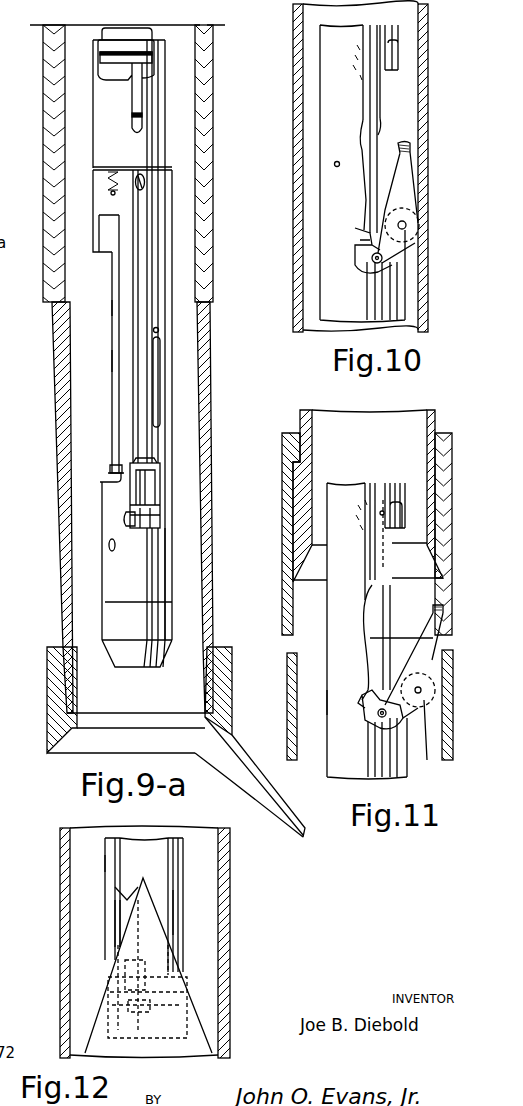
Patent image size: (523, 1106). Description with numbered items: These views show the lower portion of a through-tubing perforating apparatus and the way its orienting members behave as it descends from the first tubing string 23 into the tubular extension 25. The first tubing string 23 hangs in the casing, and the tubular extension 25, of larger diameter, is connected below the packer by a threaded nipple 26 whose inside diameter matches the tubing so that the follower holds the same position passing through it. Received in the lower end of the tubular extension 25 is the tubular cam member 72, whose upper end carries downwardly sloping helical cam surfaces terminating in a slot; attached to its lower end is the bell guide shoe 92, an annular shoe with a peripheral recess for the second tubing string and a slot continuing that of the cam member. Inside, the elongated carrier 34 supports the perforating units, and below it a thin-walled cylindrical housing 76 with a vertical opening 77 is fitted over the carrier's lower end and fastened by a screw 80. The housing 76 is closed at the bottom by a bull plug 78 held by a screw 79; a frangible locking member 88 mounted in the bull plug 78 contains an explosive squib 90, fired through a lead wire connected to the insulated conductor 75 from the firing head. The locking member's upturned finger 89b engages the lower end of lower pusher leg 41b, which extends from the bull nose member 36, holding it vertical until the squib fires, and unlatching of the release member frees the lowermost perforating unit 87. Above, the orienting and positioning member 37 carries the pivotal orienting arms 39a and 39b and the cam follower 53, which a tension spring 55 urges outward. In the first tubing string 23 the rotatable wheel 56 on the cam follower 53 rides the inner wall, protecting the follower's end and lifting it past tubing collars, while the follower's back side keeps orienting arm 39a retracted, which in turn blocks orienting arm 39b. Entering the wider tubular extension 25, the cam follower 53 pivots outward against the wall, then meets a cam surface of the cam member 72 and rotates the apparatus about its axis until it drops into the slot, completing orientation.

In FIG. 10, the first tubing string 23 is at (428, 77).
In FIG. 9A, the tubular extension 25 is at (213, 67).
In FIG. 11, the tubular extension 25 is at (283, 607).
In FIG. 12, the tubular extension 25 is at (230, 917).
In FIG. 11, the threaded nipple 26 is at (287, 445).
In FIG. 9A, the elongated carrier 34 is at (106, 114).
In FIG. 9A, the bull nose member 36 is at (170, 333).
In FIG. 11, the orienting and positioning member 37 is at (322, 703).
In FIG. 12, the orienting and positioning member 37 is at (97, 863).
In FIG. 10, the orienting arm 39a is at (380, 133).
In FIG. 11, the orienting arm 39a is at (392, 617).
In FIG. 12, the orienting arm 39a is at (127, 870).
In FIG. 12, the orienting arm 39b is at (175, 906).
In FIG. 9A, the lower pusher leg 41b is at (112, 308).
In FIG. 10, the cam follower 53 is at (398, 197).
In FIG. 11, the cam follower 53 is at (428, 662).
In FIG. 12, the cam follower 53 is at (125, 907).
In FIG. 10, the tension spring 55 is at (370, 228).
In FIG. 11, the tension spring 55 is at (362, 718).
In FIG. 10, the rotatable wheel 56 is at (420, 240).
In FIG. 11, the rotatable wheel 56 is at (433, 693).
In FIG. 9A, the tubular cam member 72 is at (210, 405).
In FIG. 11, the tubular cam member 72 is at (447, 737).
In FIG. 12, the tubular cam member 72 is at (199, 1043).
In FIG. 9A, the insulated conductor 75 is at (133, 516).
In FIG. 9A, the cylindrical housing 76 is at (130, 268).
In FIG. 9A, the vertical opening 77 is at (100, 360).
In FIG. 9A, the bull plug 78 is at (118, 643).
In FIG. 9A, the screw 79 is at (106, 550).
In FIG. 9A, the screw 80 is at (146, 182).
In FIG. 9A, the lowermost perforating unit 87 is at (105, 42).
In FIG. 9A, the frangible locking member 88 is at (157, 516).
In FIG. 9A, the upturned finger 89b is at (113, 470).
In FIG. 9A, the explosive cartridge or squib 90 is at (147, 494).
In FIG. 9A, the bell guide shoe 92 is at (236, 776).